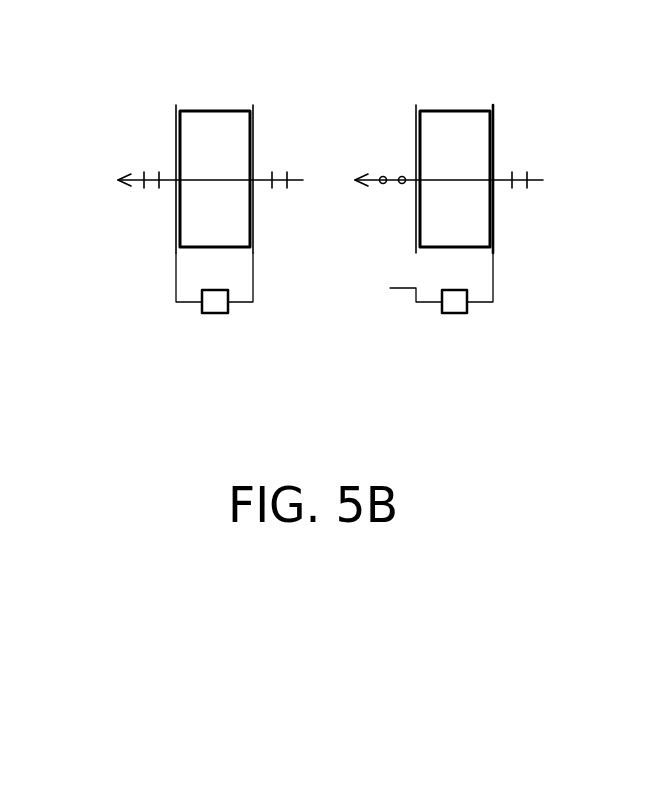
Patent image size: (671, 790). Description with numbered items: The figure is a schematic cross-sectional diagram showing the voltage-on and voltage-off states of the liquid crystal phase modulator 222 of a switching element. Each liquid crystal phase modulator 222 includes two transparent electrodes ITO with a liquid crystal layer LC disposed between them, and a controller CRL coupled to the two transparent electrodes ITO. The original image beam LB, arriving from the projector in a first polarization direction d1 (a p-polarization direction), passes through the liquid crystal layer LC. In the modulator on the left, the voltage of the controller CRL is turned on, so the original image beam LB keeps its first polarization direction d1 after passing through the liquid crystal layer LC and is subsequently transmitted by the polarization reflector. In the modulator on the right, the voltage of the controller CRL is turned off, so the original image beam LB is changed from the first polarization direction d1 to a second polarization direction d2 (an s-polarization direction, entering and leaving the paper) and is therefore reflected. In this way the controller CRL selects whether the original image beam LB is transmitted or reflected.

The liquid crystal phase modulator 222 is at (138, 347).
The transparent electrodes ITO is at (415, 105).
The liquid crystal layer LC is at (465, 233).
The original image beam LB is at (293, 176).
The first polarization direction d1 is at (143, 185).
The second polarization direction d2 is at (385, 186).
The controller CRL is at (440, 308).